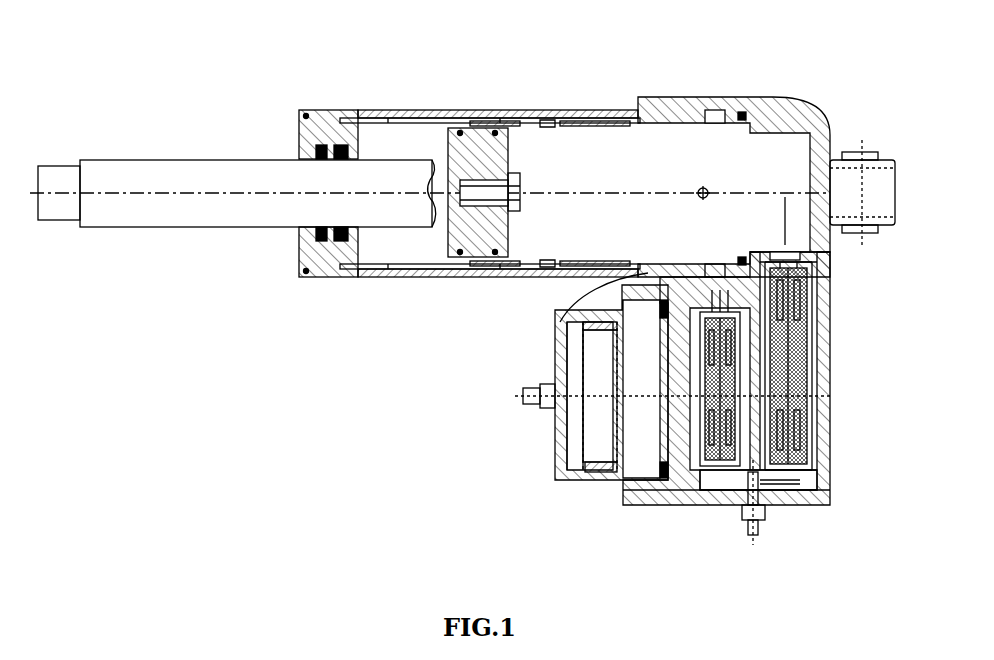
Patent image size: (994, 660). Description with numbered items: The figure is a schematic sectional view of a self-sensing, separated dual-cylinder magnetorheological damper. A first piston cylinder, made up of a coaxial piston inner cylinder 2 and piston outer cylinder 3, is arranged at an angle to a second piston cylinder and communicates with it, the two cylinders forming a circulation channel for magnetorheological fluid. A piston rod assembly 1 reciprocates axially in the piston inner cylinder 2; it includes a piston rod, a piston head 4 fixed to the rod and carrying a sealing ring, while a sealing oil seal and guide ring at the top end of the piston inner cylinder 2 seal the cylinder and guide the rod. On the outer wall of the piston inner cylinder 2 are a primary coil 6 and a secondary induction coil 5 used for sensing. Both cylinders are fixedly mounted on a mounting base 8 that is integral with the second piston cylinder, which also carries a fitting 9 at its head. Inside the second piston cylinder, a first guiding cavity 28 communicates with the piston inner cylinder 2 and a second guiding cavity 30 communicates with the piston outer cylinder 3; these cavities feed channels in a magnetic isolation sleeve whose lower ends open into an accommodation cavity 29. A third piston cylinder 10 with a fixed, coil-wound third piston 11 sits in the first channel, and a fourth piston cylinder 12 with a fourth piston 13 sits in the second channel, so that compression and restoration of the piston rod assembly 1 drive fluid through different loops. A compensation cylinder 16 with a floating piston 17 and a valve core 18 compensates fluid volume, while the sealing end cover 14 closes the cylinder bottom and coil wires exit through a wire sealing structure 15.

The piston rod assembly 1 is at (135, 175).
The piston inner cylinder 2 is at (305, 140).
The piston outer cylinder 3 is at (367, 115).
The piston head 4 is at (453, 133).
The secondary induction coil 5 is at (497, 122).
The primary coil 6 is at (557, 122).
The mounting base 8 is at (730, 110).
The fitting 9 is at (843, 178).
The third piston cylinder 10 is at (830, 290).
The third piston 11 is at (832, 342).
The fourth piston cylinder 12 is at (832, 393).
The fourth piston 13 is at (825, 428).
The sealing end cover 14 is at (814, 500).
The wire sealing structure 15 is at (753, 533).
The compensation cylinder 16 is at (637, 480).
The floating piston 17 is at (605, 478).
The valve core 18 is at (592, 439).
The first guiding cavity 28 is at (808, 253).
The accommodation cavity 29 is at (777, 505).
The second guiding cavity 30 is at (555, 340).